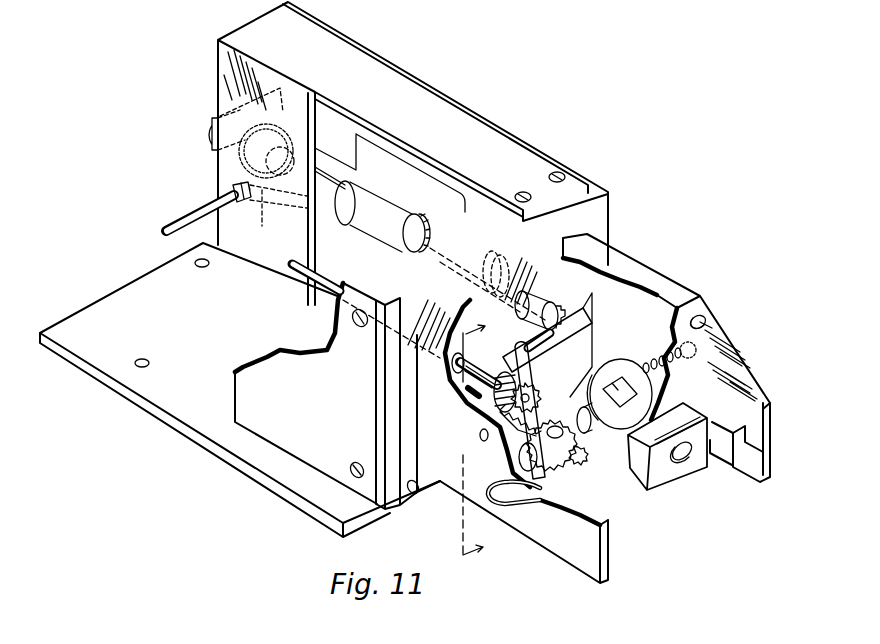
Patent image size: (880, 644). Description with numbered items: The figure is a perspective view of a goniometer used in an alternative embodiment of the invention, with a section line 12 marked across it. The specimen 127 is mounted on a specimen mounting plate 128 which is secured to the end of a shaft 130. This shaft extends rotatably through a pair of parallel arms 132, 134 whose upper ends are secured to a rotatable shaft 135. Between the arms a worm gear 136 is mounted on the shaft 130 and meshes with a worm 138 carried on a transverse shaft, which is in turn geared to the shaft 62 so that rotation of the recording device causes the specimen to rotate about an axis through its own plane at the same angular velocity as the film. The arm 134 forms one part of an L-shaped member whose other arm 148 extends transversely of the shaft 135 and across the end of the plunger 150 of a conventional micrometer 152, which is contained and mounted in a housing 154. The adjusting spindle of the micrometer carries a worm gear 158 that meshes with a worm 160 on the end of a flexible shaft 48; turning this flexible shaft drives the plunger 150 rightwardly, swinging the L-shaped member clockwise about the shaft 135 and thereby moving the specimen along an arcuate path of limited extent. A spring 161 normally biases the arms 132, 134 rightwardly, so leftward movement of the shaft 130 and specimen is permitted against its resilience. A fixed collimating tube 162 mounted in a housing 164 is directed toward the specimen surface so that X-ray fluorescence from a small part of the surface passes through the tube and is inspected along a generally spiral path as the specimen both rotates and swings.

The section line 12- 12 is at (485, 435).
The flexible shaft 48 is at (165, 222).
The shaft 62 is at (291, 276).
The specimen 127 is at (612, 366).
The specimen mounting plate 128 is at (616, 428).
The shaft 130 is at (570, 456).
The arm 132 is at (548, 363).
The arm 134 is at (546, 479).
The rotatable shaft 135 is at (500, 366).
The worm gear 136 is at (578, 462).
The worm 138 is at (553, 382).
The arm 148 is at (584, 310).
The plunger 150 is at (563, 303).
The micrometer 152 is at (382, 200).
The housing 154 is at (527, 146).
The worm gear 158 is at (291, 97).
The worm 160 is at (264, 226).
The spring 161 is at (699, 298).
The collimating tube 162 is at (685, 457).
The housing 164 is at (650, 481).